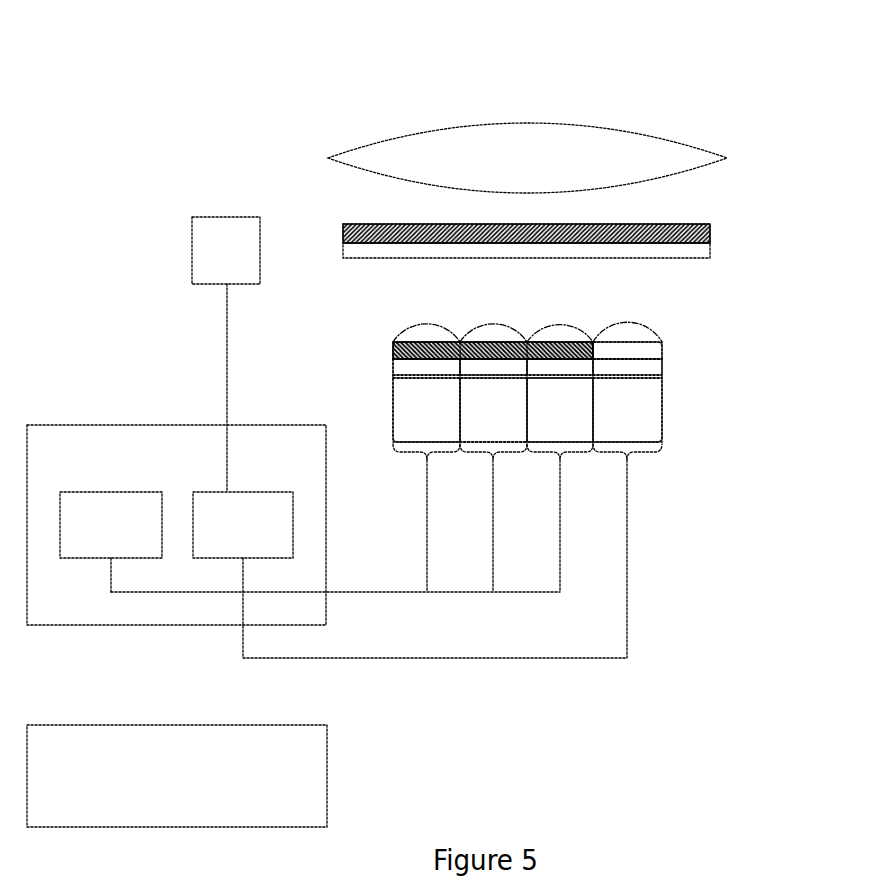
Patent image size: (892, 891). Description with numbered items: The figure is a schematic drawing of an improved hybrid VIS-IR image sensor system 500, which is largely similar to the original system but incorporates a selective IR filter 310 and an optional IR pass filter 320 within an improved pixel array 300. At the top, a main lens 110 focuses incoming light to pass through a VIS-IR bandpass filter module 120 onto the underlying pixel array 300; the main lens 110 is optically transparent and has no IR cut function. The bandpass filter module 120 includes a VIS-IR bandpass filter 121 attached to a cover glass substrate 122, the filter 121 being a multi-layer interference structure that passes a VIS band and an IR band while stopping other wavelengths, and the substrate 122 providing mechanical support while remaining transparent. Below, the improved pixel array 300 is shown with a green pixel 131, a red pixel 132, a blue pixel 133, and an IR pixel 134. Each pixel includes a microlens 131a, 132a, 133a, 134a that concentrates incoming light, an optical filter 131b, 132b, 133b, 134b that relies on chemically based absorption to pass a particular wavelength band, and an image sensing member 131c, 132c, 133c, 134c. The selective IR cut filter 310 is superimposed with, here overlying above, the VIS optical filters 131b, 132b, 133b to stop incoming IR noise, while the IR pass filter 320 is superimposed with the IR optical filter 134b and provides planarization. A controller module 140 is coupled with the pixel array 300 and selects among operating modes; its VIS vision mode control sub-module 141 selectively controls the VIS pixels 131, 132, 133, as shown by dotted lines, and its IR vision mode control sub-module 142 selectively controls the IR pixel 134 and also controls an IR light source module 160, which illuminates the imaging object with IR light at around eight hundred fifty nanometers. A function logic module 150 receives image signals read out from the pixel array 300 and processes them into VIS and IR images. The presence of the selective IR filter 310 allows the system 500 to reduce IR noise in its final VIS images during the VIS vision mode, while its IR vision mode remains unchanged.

The improved hybrid VIS-IR image sensor system 500 is at (725, 95).
The main lens 110 is at (527, 158).
The VIS-IR bandpass filter module 120 is at (787, 211).
The VIS-IR bandpass filter 121 is at (712, 233).
The cover glass substrate 122 is at (712, 250).
The improved VIS-IR image sensor pixel array 300 is at (663, 407).
The selective IR cut filter 310 is at (393, 349).
The IR pass filter 320 is at (663, 350).
The green pixel 131 is at (397, 376).
The red pixel 132 is at (462, 376).
The blue pixel 133 is at (530, 376).
The IR pixel 134 is at (598, 376).
The microlens 131a is at (427, 338).
The microlens 132a is at (493, 338).
The microlens 133a is at (560, 338).
The microlens 134a is at (627, 338).
The G optical filter 131b is at (427, 367).
The R optical filter 132b is at (493, 367).
The B optical filter 133b is at (560, 367).
The IR optical filter 134b is at (627, 367).
The image sensing member 131c is at (426, 410).
The image sensing member 132c is at (493, 410).
The image sensing member 133c is at (560, 410).
The image sensing member 134c is at (627, 410).
The controller module 140 is at (176, 541).
The VIS vision mode control sub-module 141 is at (111, 542).
The IR vision mode control sub-module 142 is at (243, 575).
The function logic module 150 is at (177, 776).
The IR light source module 160 is at (226, 354).